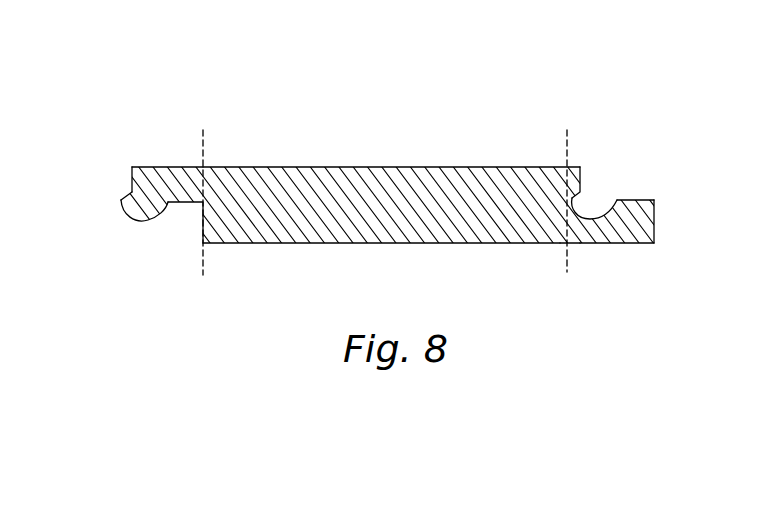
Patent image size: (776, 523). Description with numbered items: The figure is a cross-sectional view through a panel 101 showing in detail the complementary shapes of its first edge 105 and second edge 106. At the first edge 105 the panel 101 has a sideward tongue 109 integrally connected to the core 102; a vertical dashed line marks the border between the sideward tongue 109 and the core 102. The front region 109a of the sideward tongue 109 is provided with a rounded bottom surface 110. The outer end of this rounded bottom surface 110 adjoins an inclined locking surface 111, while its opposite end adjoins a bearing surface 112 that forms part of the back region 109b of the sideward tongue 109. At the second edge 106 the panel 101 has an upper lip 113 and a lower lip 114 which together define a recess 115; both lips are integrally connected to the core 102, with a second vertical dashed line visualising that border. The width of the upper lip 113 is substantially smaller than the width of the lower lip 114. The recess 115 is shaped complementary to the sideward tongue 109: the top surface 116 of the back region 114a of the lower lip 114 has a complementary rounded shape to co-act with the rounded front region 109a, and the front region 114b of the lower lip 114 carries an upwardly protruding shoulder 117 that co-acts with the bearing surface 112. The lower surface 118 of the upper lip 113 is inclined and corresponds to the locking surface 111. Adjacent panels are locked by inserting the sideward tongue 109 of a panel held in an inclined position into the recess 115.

The panel 101 is at (310, 103).
The core 102 is at (390, 197).
The first edge 105 is at (100, 110).
The second edge 106 is at (657, 100).
The sideward tongue 109 is at (131, 177).
The front region of the sideward tongue 109a is at (165, 167).
The back region of the sideward tongue 109b is at (196, 167).
The rounded bottom surface 110 is at (128, 218).
The inclined locking surface 111 is at (131, 190).
The bearing surface 112 is at (185, 205).
The upper lip 113 is at (575, 207).
The lower lip 114 is at (615, 243).
The back region of the lower lip 114a is at (570, 228).
The front region of the lower lip 114b is at (654, 225).
The recess 115 is at (611, 191).
The top surface of the back region of the lower lip 116 is at (580, 213).
The upwardly protruding shoulder 117 is at (641, 200).
The lower surface of the upper lip 118 is at (582, 197).